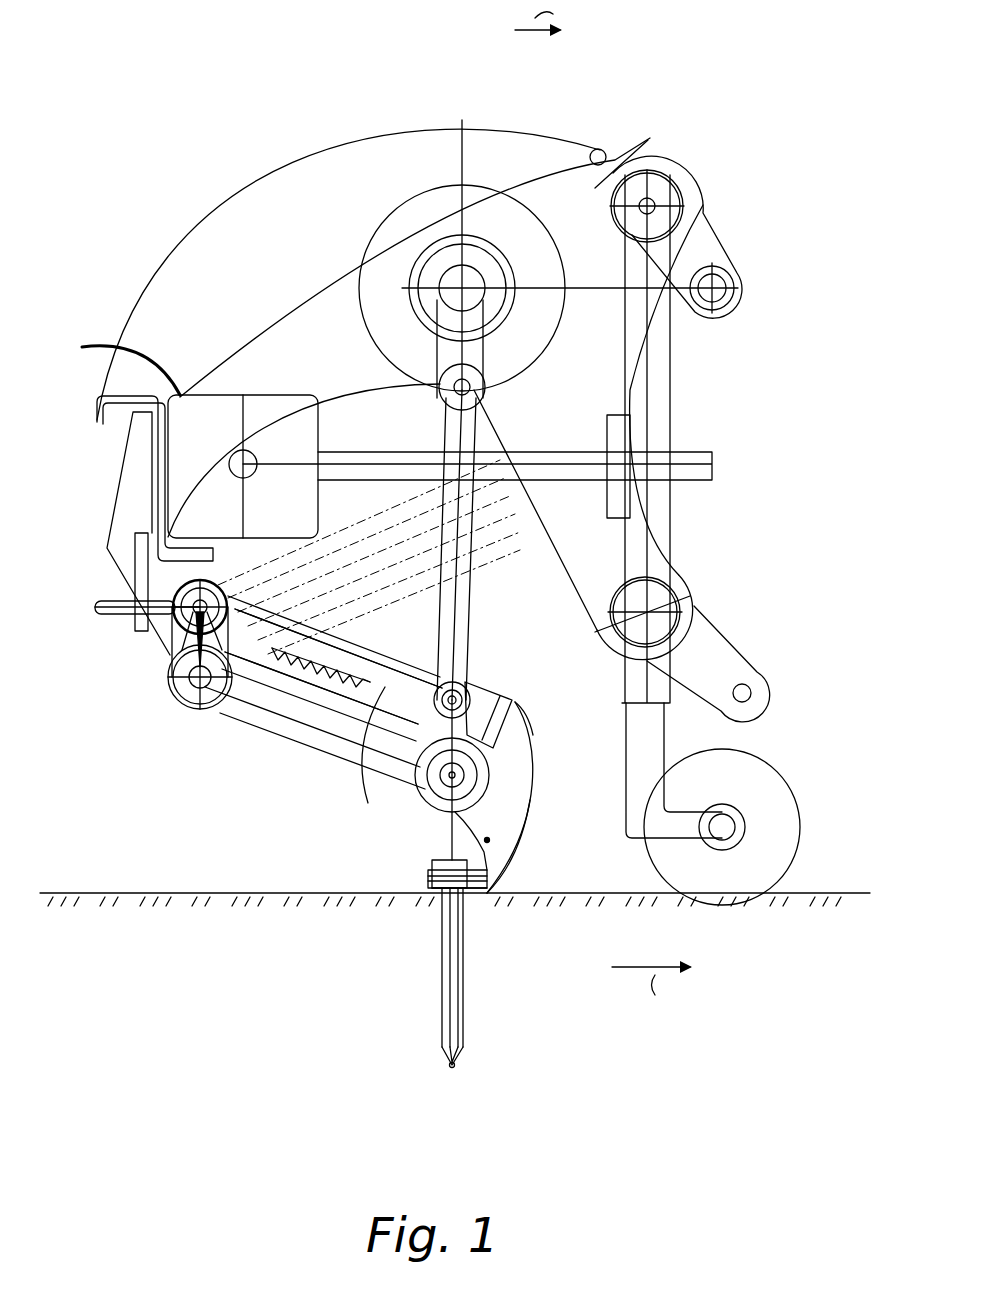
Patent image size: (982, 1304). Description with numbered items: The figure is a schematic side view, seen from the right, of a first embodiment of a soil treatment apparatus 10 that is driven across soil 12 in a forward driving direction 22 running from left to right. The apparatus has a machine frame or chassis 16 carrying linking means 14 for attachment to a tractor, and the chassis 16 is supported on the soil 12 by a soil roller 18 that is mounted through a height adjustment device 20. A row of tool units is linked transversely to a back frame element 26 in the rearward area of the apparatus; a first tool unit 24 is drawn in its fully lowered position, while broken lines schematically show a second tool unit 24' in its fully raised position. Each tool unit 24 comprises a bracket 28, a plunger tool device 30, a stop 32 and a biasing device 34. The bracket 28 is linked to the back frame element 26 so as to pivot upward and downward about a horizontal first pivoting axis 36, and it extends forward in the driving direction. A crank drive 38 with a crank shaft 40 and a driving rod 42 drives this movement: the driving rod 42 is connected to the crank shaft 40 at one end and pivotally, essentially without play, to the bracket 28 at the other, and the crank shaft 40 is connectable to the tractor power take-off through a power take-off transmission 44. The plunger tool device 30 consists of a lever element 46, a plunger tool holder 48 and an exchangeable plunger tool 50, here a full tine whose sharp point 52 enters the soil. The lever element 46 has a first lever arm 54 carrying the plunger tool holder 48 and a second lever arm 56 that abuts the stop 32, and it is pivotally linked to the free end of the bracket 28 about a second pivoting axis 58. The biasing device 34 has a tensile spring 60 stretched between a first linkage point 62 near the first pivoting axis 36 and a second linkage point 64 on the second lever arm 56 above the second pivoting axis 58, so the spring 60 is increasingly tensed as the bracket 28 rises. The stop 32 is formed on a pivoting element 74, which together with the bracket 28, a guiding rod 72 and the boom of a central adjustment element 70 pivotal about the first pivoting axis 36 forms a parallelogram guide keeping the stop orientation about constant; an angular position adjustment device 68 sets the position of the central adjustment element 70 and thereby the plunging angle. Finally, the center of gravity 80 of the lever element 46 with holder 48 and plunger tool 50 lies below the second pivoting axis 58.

The soil treatment apparatus 10 is at (700, 92).
The soil 12 is at (826, 893).
The linking means 14 is at (768, 288).
The chassis 16 is at (118, 344).
The soil roller 18 is at (778, 792).
The height adjustment device 20 is at (672, 710).
The driving direction 22 is at (610, 505).
The tool unit 24 is at (323, 724).
The second tool unit 24' is at (383, 557).
The back frame element 26 is at (115, 553).
The bracket 28 is at (352, 755).
The plunger tool device 30 is at (545, 824).
The stop 32 is at (512, 690).
The biasing device 34 is at (308, 672).
The first pivoting axis 36 is at (170, 712).
The crank drive 38 is at (546, 380).
The crank shaft 40 is at (503, 318).
The driving rod 42 is at (470, 440).
The power take-off transmission 44 is at (292, 395).
The lever element 46 is at (535, 777).
The plunger tool holder 48 is at (476, 893).
The plunger tool 50 is at (478, 987).
The needle tip 52 is at (442, 1026).
The first lever arm 54 is at (504, 864).
The second lever arm 56 is at (522, 725).
The second pivoting axis 58 is at (445, 785).
The tensile spring 60 is at (372, 665).
The first linkage point 62 is at (232, 640).
The second linkage point 64 is at (462, 697).
The angular position adjustment device 68 is at (168, 652).
The central adjustment element 70 is at (183, 695).
The guiding rod 72 is at (385, 686).
The pivoting element 74 is at (430, 728).
The center of gravity 80 is at (478, 843).